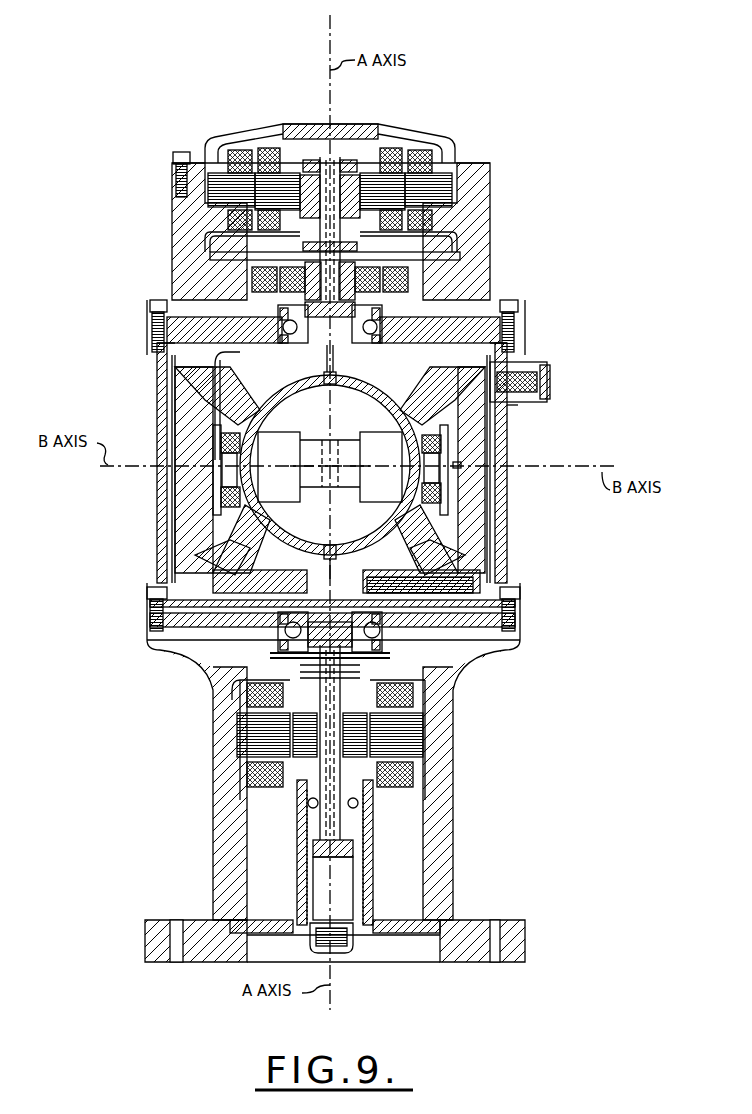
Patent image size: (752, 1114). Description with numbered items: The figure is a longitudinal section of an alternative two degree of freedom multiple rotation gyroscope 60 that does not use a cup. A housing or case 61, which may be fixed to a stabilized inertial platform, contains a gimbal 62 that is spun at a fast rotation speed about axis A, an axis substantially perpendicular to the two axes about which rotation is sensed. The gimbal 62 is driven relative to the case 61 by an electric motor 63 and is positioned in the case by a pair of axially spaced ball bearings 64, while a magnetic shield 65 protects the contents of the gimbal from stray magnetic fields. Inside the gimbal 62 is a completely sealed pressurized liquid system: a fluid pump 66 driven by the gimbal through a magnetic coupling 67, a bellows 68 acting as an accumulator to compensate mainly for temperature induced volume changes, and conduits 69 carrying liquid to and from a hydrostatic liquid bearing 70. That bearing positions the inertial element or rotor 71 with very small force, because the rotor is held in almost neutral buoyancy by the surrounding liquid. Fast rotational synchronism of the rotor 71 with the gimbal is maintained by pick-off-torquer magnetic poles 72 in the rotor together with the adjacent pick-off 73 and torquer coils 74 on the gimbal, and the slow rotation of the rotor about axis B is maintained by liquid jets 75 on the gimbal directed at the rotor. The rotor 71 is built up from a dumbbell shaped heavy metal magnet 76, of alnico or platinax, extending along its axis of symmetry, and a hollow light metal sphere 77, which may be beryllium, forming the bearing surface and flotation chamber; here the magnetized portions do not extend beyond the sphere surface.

The two degree of freedom multiple rotation gyroscope 60 is at (526, 432).
The housing or case 61 is at (500, 496).
The gimbal 62 is at (490, 520).
The electric motor 63 is at (432, 732).
The ball bearings 64 is at (388, 325).
The magnetic shield 65 is at (452, 690).
The fluid pump 66 is at (365, 851).
The magnetic coupling 67 is at (366, 956).
The bellows 68 is at (505, 578).
The conduits 69 is at (200, 557).
The hydrostatic liquid bearing 70 is at (375, 500).
The inertial element or rotor 71 is at (218, 380).
The pick-off-torquer magnetic poles 72 is at (287, 458).
The pick-off 73 is at (215, 470).
The torquer coils 74 is at (470, 490).
The liquid jets 75 is at (330, 385).
The dumbbell shaped heavy metal magnet 76 is at (330, 440).
The hollow light metal sphere 77 is at (345, 440).